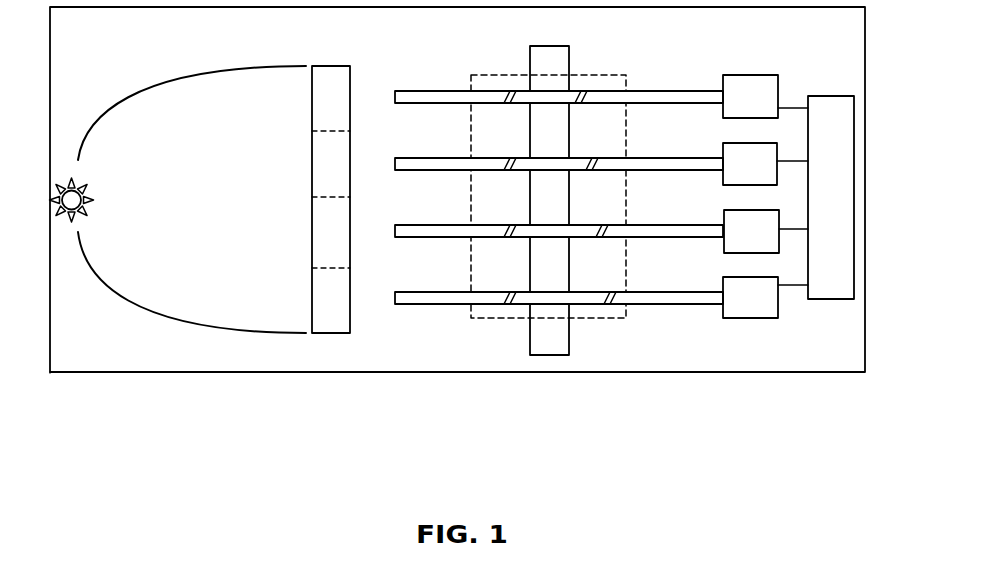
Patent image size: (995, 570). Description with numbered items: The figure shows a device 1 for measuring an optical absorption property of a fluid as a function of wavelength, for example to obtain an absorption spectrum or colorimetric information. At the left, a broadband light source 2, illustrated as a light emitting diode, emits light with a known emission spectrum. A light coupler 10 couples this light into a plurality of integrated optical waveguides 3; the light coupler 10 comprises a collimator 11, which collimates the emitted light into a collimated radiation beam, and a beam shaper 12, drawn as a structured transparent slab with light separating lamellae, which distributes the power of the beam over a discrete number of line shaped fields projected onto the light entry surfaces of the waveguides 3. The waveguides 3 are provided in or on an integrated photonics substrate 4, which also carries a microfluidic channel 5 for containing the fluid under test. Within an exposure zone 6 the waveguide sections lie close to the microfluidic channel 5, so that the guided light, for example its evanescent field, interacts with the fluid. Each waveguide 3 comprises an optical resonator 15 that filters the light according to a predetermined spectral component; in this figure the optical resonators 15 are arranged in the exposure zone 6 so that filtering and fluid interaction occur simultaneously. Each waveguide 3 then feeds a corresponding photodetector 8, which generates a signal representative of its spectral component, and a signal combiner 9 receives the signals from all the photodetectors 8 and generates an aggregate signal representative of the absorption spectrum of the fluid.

The device 1 is at (402, 415).
The broadband light source 2 is at (68, 243).
The integrated optical waveguides 3 is at (439, 237).
The integrated photonics substrate 4 is at (62, 373).
The microfluidic channel 5 is at (537, 355).
The exposure zone 6 is at (602, 318).
The photodetectors 8 is at (740, 233).
The signal combiner 9 is at (834, 277).
The light coupler 10 is at (230, 265).
The collimator 11 is at (165, 333).
The beam shaper 12 is at (309, 257).
The optical resonator 15 is at (574, 159).